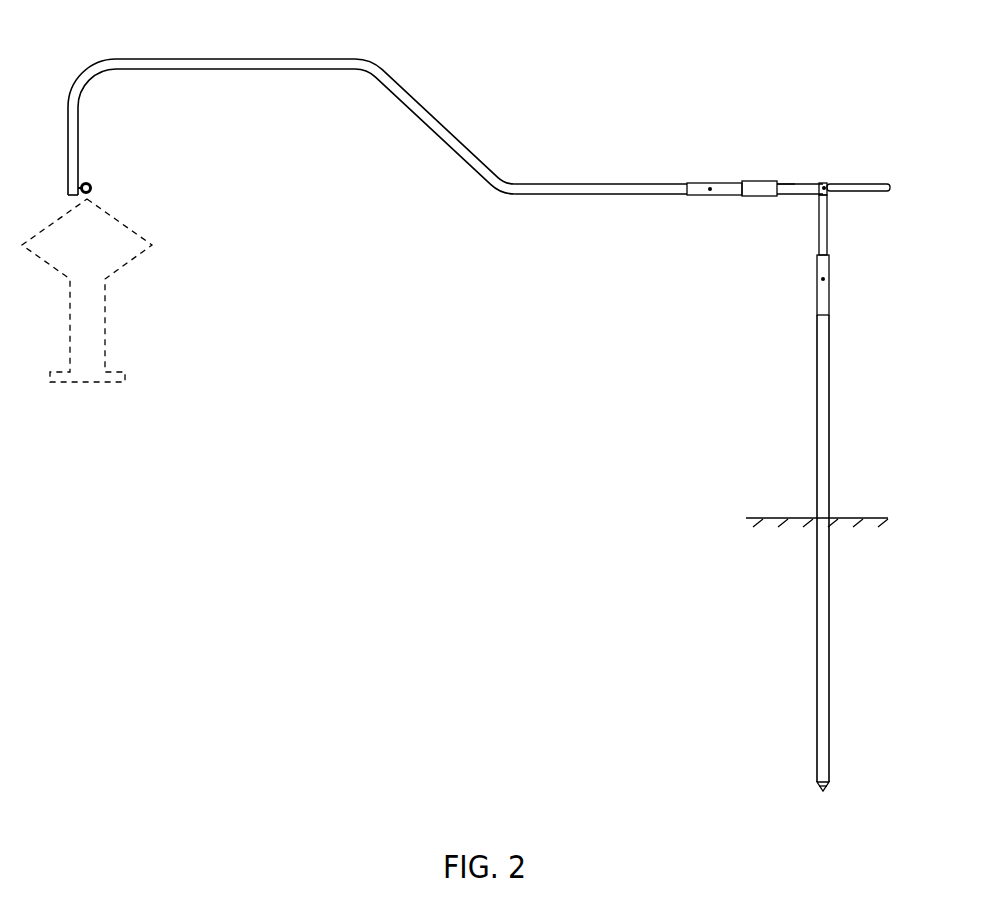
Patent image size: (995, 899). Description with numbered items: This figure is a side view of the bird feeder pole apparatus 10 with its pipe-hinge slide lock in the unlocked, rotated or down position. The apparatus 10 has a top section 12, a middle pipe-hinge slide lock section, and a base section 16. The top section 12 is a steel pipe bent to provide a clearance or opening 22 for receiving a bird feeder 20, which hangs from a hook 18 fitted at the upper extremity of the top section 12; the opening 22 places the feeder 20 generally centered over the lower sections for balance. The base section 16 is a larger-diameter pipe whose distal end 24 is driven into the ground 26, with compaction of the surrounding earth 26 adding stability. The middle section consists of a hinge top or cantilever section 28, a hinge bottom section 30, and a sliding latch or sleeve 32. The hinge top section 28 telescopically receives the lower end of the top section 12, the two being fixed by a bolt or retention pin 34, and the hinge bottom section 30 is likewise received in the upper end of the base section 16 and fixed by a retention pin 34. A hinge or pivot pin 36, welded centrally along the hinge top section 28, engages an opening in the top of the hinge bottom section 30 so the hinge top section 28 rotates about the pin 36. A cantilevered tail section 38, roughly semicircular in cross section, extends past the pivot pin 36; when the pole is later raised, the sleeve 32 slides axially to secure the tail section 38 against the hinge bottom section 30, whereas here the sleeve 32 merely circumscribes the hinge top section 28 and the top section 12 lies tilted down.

The bird feeder pole/plant hanger pole apparatus 10 is at (562, 46).
The top section 12 is at (572, 194).
The base section 16 is at (829, 410).
The hook 18 is at (93, 188).
The bird feeder 20 is at (134, 231).
The clearance or opening 22 is at (291, 127).
The distal end 24 is at (818, 652).
The ground 26 is at (782, 517).
The hinge top section 28 is at (787, 195).
The hinge bottom section 30 is at (818, 228).
The sliding latch or sleeve 32 is at (765, 182).
The bolt or retention pin 34 is at (708, 186).
The hinge or pivot pin 36 is at (823, 185).
The cantilevered tail section 38 is at (855, 184).